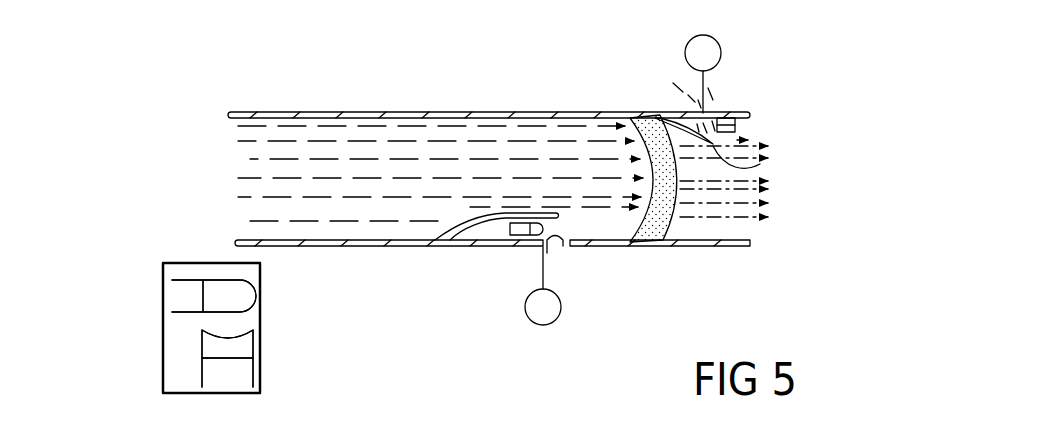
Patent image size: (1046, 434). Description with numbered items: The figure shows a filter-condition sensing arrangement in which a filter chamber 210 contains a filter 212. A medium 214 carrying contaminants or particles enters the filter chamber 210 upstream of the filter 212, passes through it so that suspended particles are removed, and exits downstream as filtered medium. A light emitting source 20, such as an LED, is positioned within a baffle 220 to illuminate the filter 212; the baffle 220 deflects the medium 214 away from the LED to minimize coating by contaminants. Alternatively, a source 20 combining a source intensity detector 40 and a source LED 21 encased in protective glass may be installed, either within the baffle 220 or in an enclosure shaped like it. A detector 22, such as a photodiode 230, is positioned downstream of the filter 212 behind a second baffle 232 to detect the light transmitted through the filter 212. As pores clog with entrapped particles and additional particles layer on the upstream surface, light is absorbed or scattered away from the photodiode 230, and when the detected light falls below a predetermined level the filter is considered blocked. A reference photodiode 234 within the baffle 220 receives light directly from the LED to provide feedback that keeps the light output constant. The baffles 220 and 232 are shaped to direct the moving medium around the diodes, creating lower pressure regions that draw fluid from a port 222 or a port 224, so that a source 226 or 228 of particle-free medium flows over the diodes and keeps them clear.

The light emitting source 20 is at (520, 263).
The source LED 21 is at (161, 284).
The detector 22 is at (798, 138).
The source intensity detector 40 is at (185, 357).
The filter chamber 210 is at (735, 237).
The filter 212 is at (661, 228).
The medium 214 is at (395, 167).
The baffle 220 is at (530, 215).
The port 222 is at (570, 247).
The port 224 is at (713, 112).
The source of particle free medium 226 is at (562, 303).
The source of particle free medium 228 is at (686, 53).
The photodiode 230 is at (737, 122).
The second baffle 232 is at (760, 164).
The reference photodiode 234 is at (245, 344).